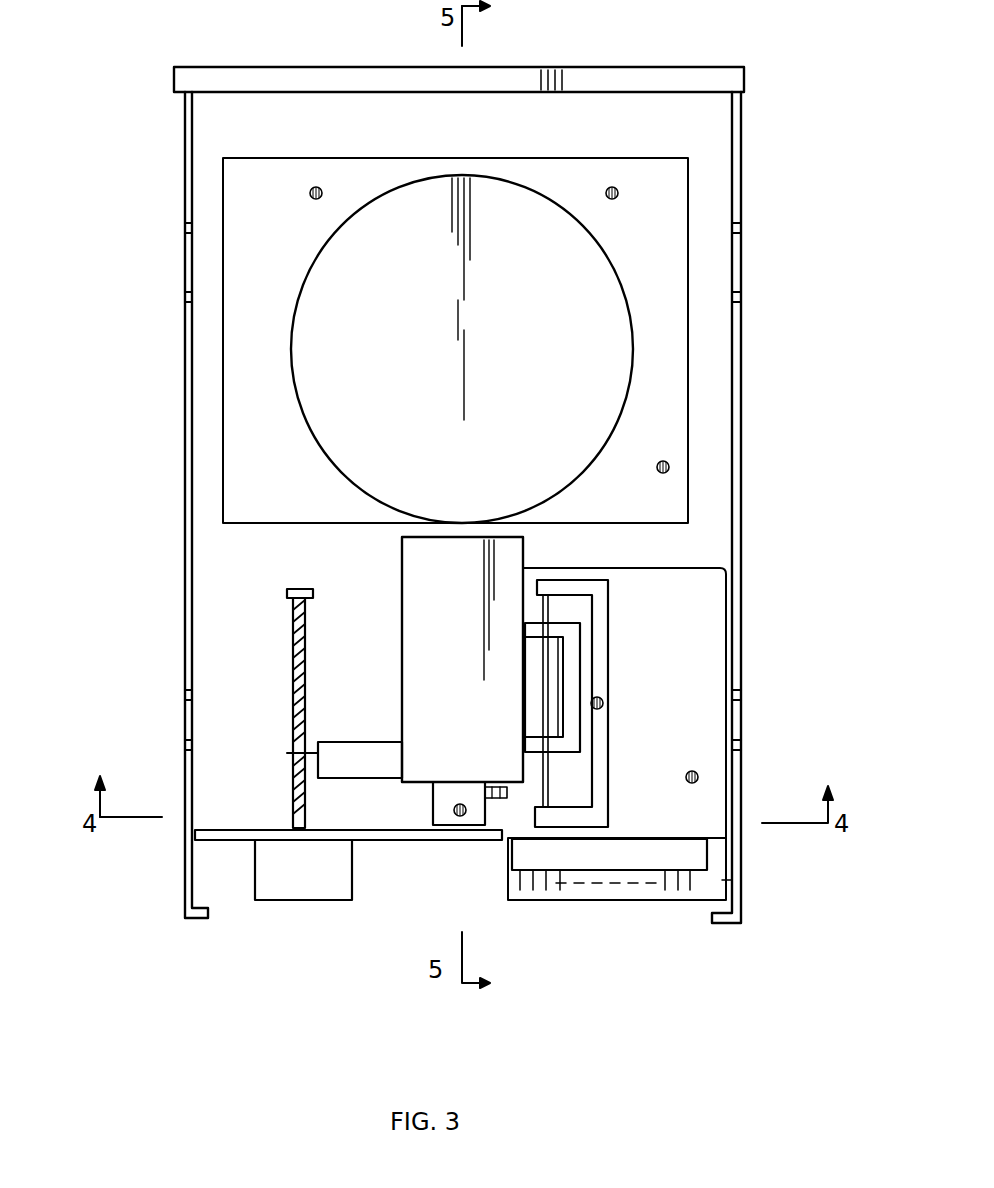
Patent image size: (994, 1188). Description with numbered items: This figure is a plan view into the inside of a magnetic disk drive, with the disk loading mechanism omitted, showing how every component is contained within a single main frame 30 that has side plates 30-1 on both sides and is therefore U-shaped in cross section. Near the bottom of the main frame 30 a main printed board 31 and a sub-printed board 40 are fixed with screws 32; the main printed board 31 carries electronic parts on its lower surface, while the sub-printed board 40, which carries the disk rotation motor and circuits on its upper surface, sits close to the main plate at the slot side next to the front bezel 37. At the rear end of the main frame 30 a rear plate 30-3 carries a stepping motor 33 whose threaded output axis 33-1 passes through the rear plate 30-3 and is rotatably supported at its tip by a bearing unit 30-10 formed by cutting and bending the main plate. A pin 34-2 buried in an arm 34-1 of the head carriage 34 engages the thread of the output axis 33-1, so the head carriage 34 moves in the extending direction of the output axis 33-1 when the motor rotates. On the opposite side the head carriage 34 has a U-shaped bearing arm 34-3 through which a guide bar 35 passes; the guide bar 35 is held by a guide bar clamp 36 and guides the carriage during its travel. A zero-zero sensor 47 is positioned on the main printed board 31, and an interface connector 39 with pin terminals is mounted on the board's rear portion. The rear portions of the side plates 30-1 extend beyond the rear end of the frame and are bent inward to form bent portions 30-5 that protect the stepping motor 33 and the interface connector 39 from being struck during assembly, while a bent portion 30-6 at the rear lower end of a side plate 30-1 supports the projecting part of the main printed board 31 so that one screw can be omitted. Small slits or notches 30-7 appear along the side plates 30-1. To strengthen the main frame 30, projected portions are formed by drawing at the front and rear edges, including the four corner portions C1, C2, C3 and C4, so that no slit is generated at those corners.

The main frame 30 is at (746, 380).
The side plate 30-1 is at (184, 458).
The rear plate 30-3 is at (405, 843).
The bent portion 30-5 is at (192, 922).
The bent portion 30-6 is at (730, 888).
The slot 30-7 is at (184, 292).
The bearing unit 30-10 is at (301, 590).
The main printed board 31 is at (513, 178).
The screw 32 is at (319, 188).
The stepping motor 33 is at (302, 902).
The output axis 33-1 is at (292, 648).
The head carriage 34 is at (468, 537).
The arm 34-1 is at (346, 760).
The pin 34-2 is at (290, 740).
The bearing arm 34-3 is at (565, 662).
The guide bar 35 is at (553, 602).
The guide bar clamp 36 is at (600, 607).
The front bezel 37 is at (706, 70).
The interface connector 39 is at (607, 860).
The sub-printed board 40 is at (675, 350).
The zero-zero sensor 47 is at (493, 800).
The corner portion C1 is at (205, 828).
The corner portion C2 is at (200, 97).
The corner portion C3 is at (722, 96).
The corner portion C4 is at (722, 832).